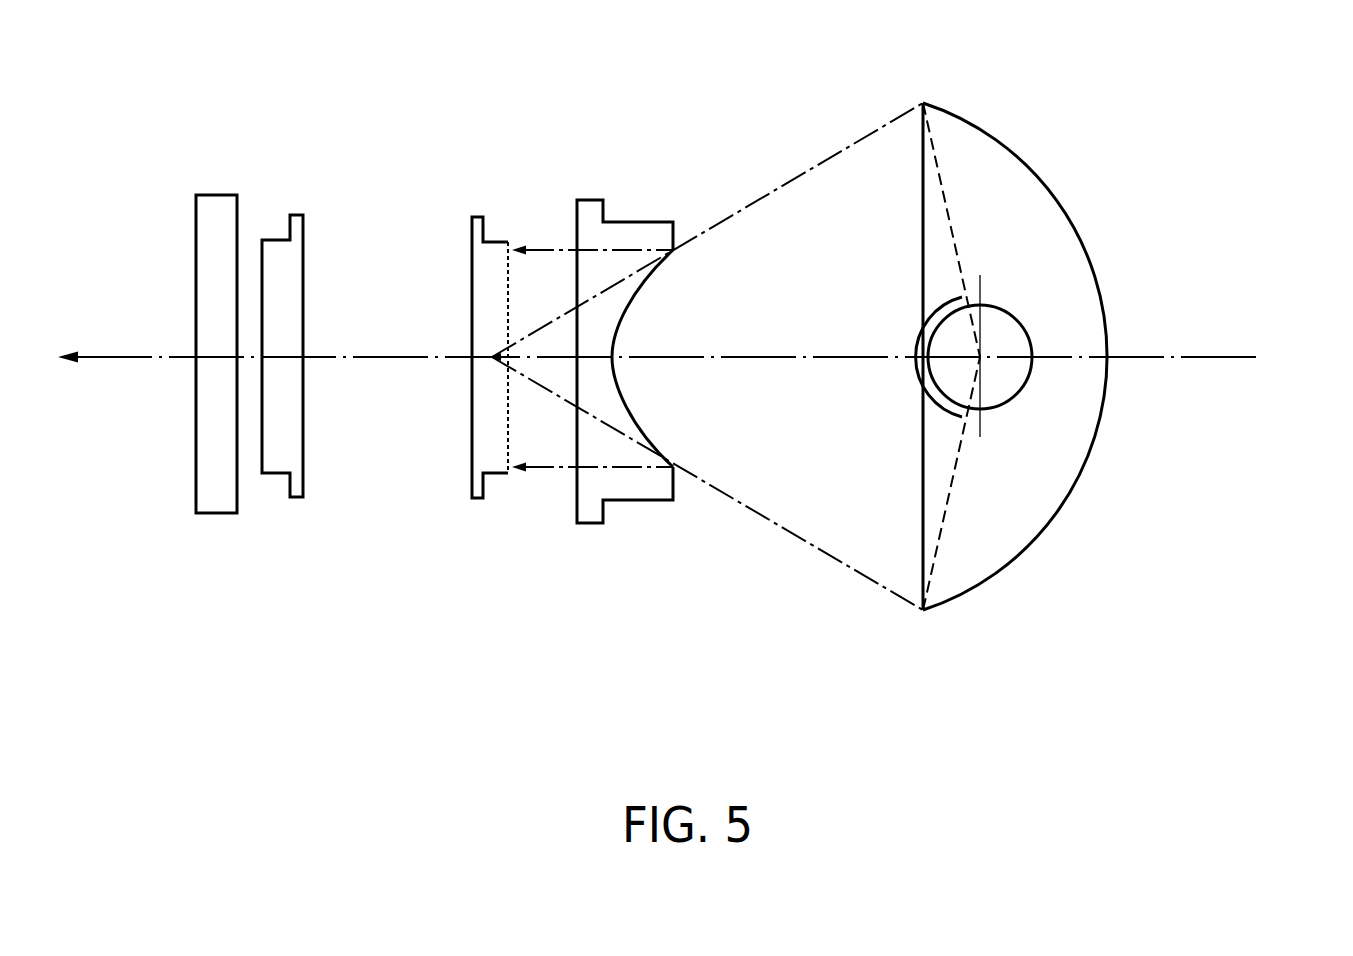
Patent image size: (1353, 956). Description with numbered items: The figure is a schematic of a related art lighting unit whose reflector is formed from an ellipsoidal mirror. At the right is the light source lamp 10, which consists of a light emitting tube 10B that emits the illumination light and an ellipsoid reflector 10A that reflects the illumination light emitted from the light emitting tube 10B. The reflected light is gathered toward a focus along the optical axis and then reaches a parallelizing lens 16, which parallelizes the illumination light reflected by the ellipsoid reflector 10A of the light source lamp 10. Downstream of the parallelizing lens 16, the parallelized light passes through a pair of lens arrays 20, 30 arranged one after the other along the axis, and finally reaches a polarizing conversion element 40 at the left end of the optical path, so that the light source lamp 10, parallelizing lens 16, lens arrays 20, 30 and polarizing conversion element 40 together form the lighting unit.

The light source lamp 10 is at (1132, 356).
The ellipsoid reflector 10A is at (1096, 440).
The light emitting tube 10B is at (1022, 322).
The parallelizing lens 16 is at (637, 500).
The lens array 20 is at (477, 215).
The lens array 30 is at (295, 215).
The polarizing conversion element 40 is at (217, 515).